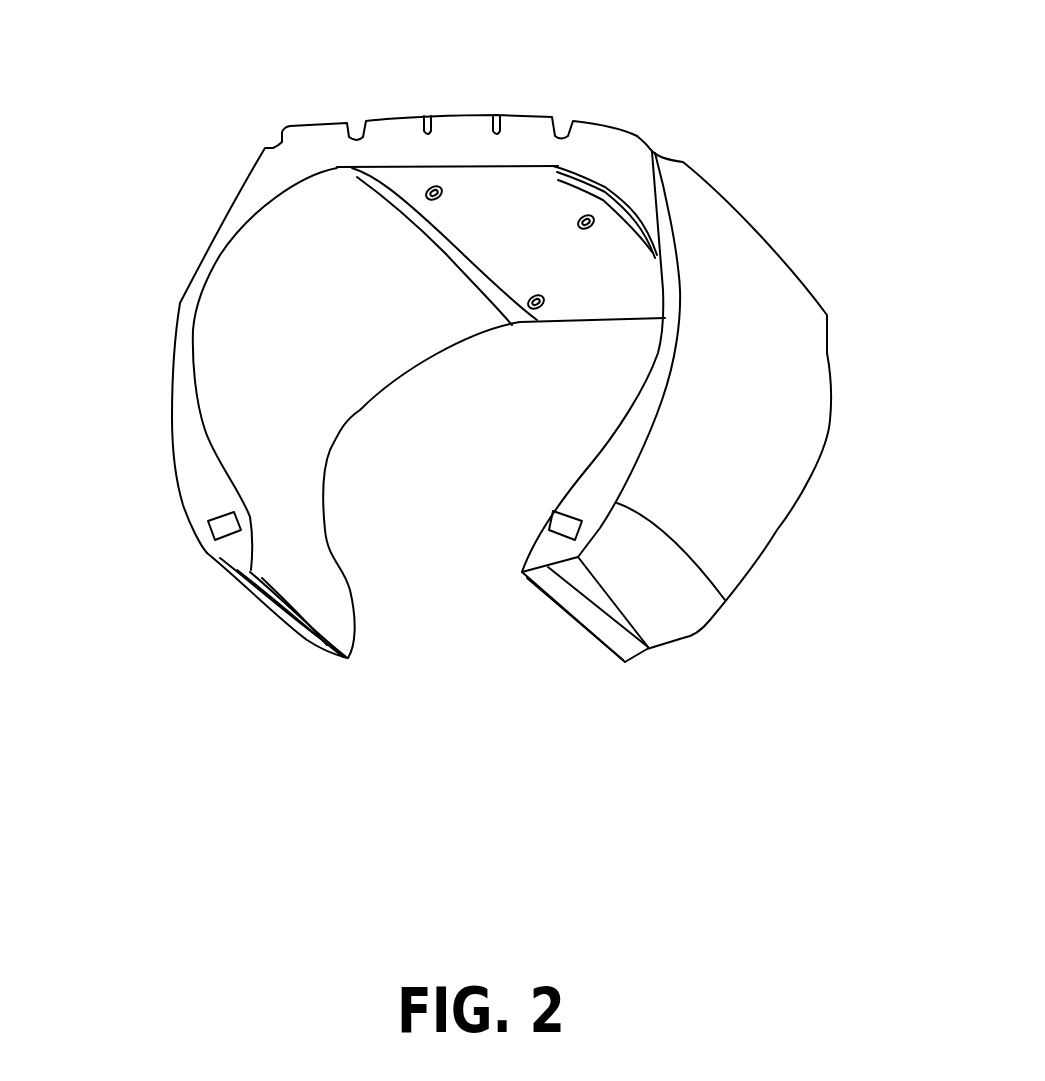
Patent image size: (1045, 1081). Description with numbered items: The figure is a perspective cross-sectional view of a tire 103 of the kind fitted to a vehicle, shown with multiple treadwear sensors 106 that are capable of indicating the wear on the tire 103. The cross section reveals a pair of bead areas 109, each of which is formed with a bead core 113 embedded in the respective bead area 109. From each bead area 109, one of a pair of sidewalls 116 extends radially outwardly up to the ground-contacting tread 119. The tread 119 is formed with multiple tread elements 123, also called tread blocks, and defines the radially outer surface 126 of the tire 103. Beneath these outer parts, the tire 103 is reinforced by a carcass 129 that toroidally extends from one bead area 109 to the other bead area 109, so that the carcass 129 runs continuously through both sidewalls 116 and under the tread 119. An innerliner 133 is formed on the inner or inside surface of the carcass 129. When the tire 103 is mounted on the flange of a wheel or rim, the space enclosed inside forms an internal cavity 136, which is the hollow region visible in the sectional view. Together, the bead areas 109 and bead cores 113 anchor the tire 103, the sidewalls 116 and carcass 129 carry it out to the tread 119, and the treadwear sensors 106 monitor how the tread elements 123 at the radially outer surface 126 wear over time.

The tire 103 is at (843, 308).
The treadwear sensor 106 is at (595, 213).
The bead area 109 is at (207, 495).
The bead core 113 is at (212, 518).
The sidewall 116 is at (187, 300).
The tread 119 is at (304, 123).
The tread element 123 is at (464, 127).
The radially outer surface 126 is at (550, 118).
The carcass 129 is at (443, 153).
The innerliner 133 is at (495, 168).
The internal cavity 136 is at (635, 368).